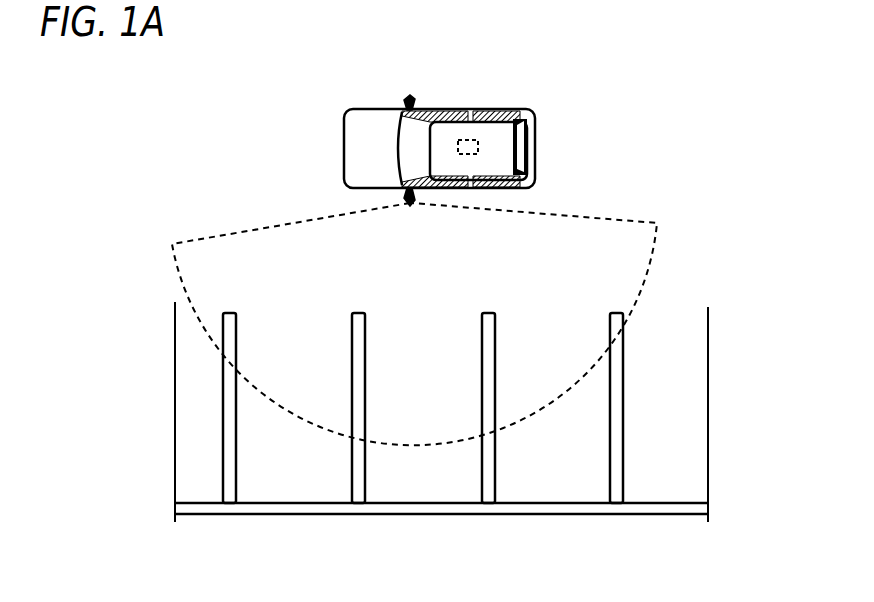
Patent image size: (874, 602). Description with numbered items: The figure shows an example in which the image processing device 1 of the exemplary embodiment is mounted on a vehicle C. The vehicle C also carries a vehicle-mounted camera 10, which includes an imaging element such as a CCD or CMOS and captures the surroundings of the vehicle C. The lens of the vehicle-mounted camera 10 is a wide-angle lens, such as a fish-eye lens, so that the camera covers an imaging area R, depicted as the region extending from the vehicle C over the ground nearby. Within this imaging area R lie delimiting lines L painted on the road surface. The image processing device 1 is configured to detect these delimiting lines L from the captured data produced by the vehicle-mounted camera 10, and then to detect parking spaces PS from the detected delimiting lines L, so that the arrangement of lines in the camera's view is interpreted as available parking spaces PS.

The image processing device 1 is at (462, 140).
The vehicle C is at (525, 109).
The vehicle-mounted camera 10 is at (411, 207).
The imaging area R is at (585, 216).
The parking space PS is at (292, 355).
The delimiting line L is at (228, 452).